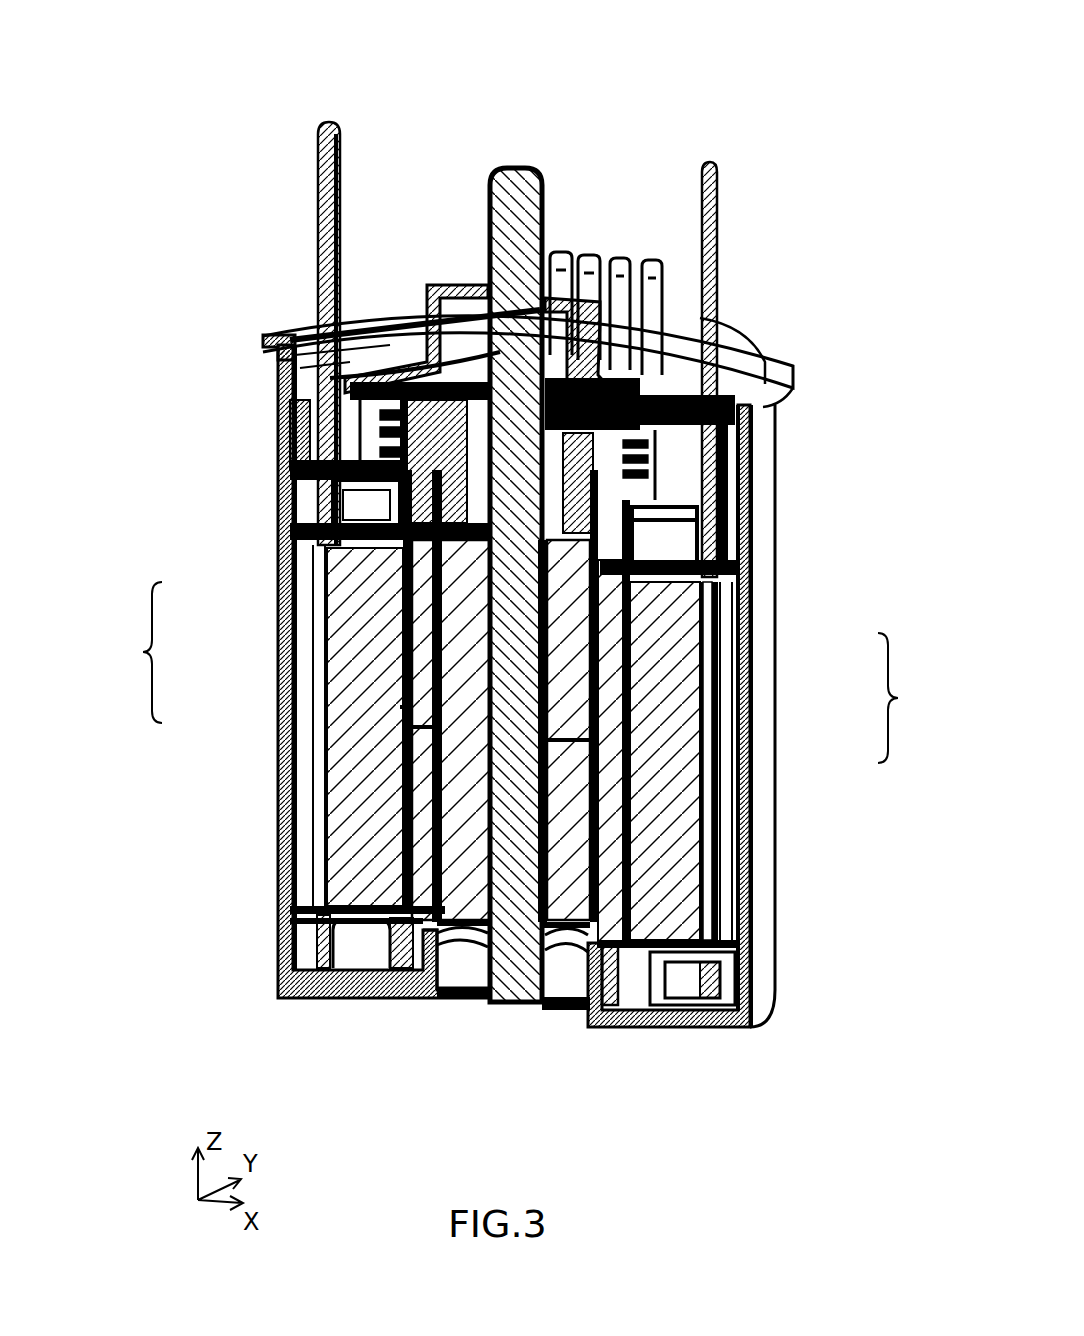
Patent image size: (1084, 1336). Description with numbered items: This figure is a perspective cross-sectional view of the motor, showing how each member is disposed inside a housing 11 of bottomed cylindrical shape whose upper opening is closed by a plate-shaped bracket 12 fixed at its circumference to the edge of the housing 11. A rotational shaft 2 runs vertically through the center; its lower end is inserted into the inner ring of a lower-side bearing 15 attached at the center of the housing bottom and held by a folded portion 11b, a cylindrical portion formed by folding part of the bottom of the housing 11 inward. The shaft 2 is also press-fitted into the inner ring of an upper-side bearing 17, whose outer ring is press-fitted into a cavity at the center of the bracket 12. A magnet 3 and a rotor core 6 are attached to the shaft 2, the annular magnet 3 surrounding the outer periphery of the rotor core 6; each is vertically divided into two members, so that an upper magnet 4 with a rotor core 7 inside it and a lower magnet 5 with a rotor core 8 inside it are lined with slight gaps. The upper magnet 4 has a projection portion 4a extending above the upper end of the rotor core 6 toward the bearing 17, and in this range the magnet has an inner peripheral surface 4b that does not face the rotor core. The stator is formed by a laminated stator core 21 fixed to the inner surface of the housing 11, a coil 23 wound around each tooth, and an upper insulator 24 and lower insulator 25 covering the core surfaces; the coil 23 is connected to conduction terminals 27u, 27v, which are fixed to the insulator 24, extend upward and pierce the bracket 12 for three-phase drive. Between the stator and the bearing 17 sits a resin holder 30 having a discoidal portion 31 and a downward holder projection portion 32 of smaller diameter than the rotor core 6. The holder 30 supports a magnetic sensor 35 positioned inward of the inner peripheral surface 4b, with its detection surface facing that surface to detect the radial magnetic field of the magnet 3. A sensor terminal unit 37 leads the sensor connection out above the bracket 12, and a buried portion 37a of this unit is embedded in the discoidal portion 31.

The rotational shaft 2 is at (522, 205).
The magnet 3 is at (137, 652).
The magnet 4 is at (408, 600).
The projection portion 4a is at (338, 492).
The inner peripheral surface 4b is at (436, 552).
The magnet 5 is at (415, 765).
The rotor core 6 is at (903, 698).
The rotor core 7 is at (578, 622).
The rotor core 8 is at (570, 775).
The housing 11 is at (283, 862).
The folded portion 11b is at (412, 976).
The bracket 12 is at (412, 345).
The bearing 15 is at (558, 978).
The bearing 17 is at (470, 330).
The stator core 21 is at (678, 875).
The coil 23 is at (680, 988).
The insulator 24 is at (660, 535).
The insulator 25 is at (633, 988).
The conduction terminal 27u is at (345, 140).
The conduction terminal 27v is at (718, 185).
The holder 30 is at (760, 338).
The discoidal portion 31 is at (737, 440).
The holder projection portion 32 is at (372, 445).
The magnetic sensor 35 is at (692, 470).
The sensor terminal unit 37 is at (600, 242).
The buried portion 37a is at (268, 348).